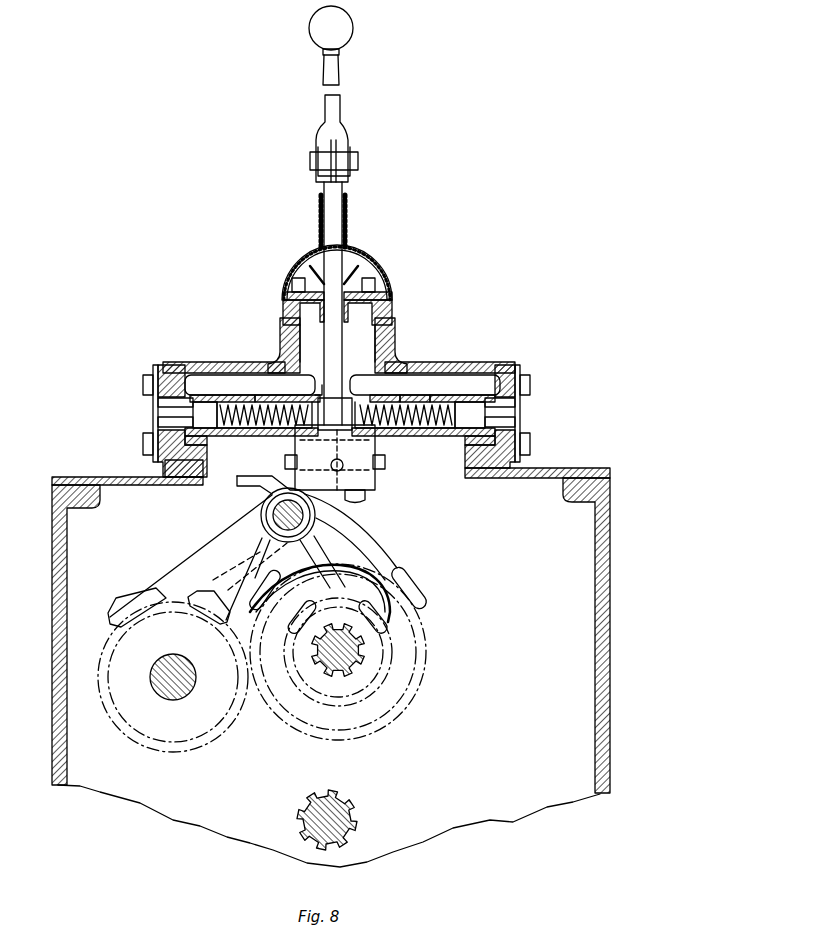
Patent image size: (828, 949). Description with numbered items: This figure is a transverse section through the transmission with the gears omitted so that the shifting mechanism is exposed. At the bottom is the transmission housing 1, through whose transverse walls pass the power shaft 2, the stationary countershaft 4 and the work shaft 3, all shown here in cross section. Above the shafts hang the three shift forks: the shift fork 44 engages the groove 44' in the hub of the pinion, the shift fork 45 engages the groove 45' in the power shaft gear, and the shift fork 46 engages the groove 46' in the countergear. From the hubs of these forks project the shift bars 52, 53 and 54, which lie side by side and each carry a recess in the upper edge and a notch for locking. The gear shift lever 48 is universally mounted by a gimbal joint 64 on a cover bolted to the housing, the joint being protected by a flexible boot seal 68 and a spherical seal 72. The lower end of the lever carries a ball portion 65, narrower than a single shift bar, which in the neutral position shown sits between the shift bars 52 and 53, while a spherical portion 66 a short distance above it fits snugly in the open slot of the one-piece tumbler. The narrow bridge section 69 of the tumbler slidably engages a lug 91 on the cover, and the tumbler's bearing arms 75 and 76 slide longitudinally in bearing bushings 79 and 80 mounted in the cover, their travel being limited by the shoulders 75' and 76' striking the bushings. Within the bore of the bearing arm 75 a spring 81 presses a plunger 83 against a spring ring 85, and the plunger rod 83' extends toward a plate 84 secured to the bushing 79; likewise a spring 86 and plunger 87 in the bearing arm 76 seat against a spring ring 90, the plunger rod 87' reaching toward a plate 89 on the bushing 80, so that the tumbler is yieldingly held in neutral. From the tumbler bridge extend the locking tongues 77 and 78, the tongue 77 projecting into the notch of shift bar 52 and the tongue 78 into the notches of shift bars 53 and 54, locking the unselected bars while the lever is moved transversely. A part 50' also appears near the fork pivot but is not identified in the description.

The transmission housing 1 is at (50, 764).
The power shaft 2 is at (362, 658).
The work shaft 3 is at (335, 795).
The countershaft 4 is at (160, 692).
The shift fork 44 is at (334, 602).
The groove 44' is at (338, 661).
The shift fork 45 is at (343, 558).
The groove 45' is at (350, 652).
The shift fork 46 is at (197, 561).
The groove 46' is at (173, 682).
The gear shift lever 48 is at (343, 362).
The pivot bracket 50' is at (276, 509).
The shift bar 52 is at (365, 448).
The shift bar 53 is at (337, 475).
The shift bar 54 is at (295, 450).
The gimbal joint 64 is at (333, 320).
The ball portion 65 is at (350, 478).
The spherical portion 66 is at (335, 414).
The flexible boot seal 68 is at (318, 262).
The narrow bridge section 69 is at (395, 395).
The spherical seal 72 is at (370, 262).
The bearing arm 75 is at (422, 385).
The shoulder 75' is at (394, 385).
The bearing arm 76 is at (226, 386).
The shoulder 76' is at (287, 386).
The locking tongue 77 is at (395, 432).
The locking tongue 78 is at (290, 432).
The bearing bushing 79 is at (460, 398).
The bearing bushing 80 is at (225, 395).
The spring 81 is at (430, 434).
The plunger 83 is at (470, 414).
The plunger rod 83' is at (520, 409).
The plate 84 is at (520, 366).
The spring ring 85 is at (485, 436).
The spring 86 is at (255, 433).
The plunger 87 is at (205, 415).
The plunger rod 87' is at (157, 412).
The plate 89 is at (160, 376).
The spring ring 90 is at (195, 436).
The lug 91 is at (322, 375).